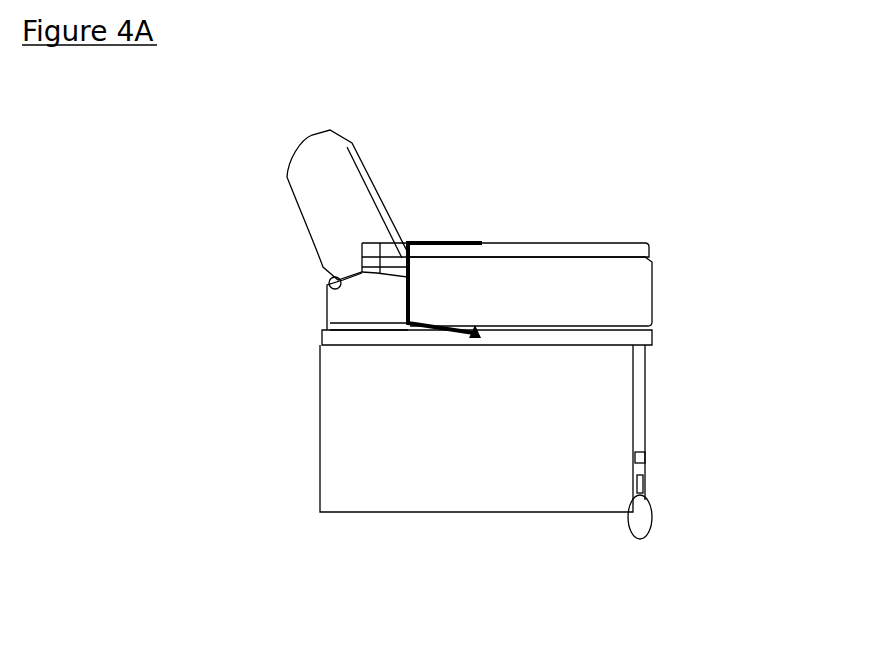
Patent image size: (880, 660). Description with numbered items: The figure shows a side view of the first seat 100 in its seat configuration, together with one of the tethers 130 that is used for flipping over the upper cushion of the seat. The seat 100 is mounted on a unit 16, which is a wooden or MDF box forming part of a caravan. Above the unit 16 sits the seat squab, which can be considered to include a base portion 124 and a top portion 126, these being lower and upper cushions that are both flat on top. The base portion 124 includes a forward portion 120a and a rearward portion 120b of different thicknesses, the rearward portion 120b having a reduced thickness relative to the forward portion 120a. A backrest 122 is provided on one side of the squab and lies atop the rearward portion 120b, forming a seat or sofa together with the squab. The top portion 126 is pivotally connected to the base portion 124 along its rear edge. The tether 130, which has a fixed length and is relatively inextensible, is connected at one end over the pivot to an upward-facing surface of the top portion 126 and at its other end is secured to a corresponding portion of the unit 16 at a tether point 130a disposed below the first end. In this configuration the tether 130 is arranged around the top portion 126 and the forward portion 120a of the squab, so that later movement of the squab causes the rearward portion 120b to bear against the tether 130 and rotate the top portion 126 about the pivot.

The first seat 100 is at (238, 548).
The unit 16 is at (553, 488).
The forward portion 120a is at (613, 299).
The rearward portion 120b is at (358, 313).
The backrest 122 is at (322, 180).
The base portion 124 is at (653, 291).
The top portion 126 is at (582, 256).
The tether 130 is at (440, 242).
The tether point 130a is at (475, 335).